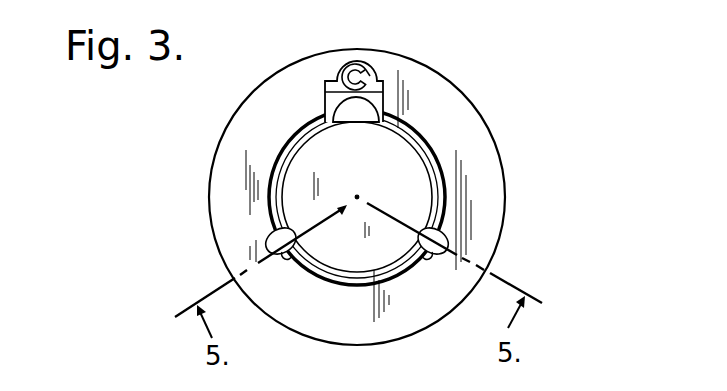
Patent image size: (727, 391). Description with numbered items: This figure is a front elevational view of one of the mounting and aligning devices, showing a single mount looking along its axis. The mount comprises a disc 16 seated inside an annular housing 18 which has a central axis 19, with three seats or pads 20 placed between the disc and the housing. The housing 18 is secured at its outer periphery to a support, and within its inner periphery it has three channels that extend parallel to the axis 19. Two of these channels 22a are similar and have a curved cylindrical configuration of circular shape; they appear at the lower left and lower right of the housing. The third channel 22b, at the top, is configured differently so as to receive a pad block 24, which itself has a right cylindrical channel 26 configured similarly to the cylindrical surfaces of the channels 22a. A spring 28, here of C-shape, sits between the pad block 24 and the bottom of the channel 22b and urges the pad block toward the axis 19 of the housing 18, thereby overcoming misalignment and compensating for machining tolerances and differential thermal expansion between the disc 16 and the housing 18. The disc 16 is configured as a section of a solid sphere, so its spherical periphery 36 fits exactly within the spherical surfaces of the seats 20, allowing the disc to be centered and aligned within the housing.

The disc 16 is at (384, 163).
The annular housing 18 is at (260, 90).
The axis 19 is at (356, 203).
The seats or pads 20 is at (330, 113).
The channels 22a is at (284, 268).
The channel 22b is at (379, 78).
The pad block 24 is at (377, 104).
The right cylindrical channel 26 is at (384, 100).
The spring 28 is at (355, 62).
The spherical periphery 36 is at (413, 143).